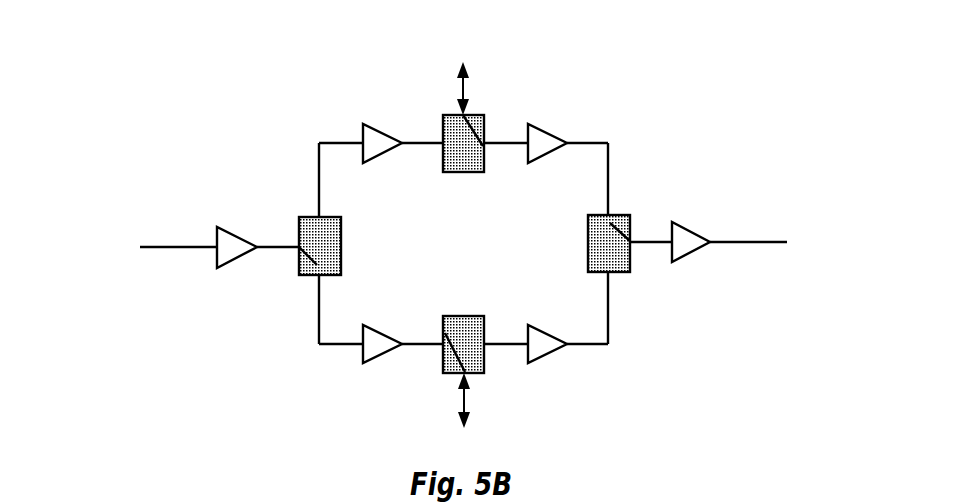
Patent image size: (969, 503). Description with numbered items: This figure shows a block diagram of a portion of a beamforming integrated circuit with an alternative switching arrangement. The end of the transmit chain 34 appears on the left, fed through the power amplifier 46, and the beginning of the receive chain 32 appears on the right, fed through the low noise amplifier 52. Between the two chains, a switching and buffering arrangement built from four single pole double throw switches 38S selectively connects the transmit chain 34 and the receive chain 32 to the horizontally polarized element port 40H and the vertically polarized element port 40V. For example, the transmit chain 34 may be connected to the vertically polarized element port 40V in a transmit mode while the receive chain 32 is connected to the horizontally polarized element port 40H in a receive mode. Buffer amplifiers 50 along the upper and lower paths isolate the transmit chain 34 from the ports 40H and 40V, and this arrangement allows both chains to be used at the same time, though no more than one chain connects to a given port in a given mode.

The transmit chain 34 is at (128, 231).
The power amplifier 46 is at (228, 227).
The single pole double throw switches 38S is at (582, 233).
The buffer amplifiers 50 is at (375, 140).
The low noise amplifier 52 is at (687, 235).
The receive chain 32 is at (748, 230).
The horizontally polarized element port 40H is at (463, 65).
The vertically polarized element port 40V is at (459, 420).